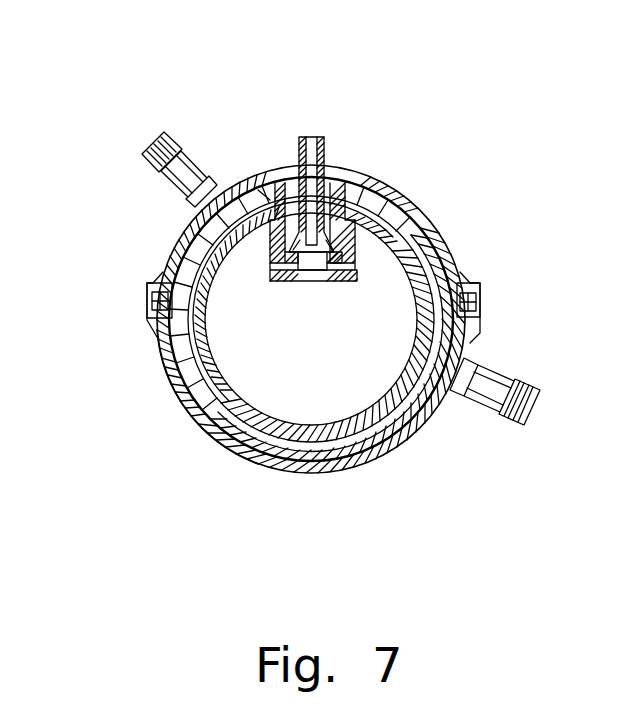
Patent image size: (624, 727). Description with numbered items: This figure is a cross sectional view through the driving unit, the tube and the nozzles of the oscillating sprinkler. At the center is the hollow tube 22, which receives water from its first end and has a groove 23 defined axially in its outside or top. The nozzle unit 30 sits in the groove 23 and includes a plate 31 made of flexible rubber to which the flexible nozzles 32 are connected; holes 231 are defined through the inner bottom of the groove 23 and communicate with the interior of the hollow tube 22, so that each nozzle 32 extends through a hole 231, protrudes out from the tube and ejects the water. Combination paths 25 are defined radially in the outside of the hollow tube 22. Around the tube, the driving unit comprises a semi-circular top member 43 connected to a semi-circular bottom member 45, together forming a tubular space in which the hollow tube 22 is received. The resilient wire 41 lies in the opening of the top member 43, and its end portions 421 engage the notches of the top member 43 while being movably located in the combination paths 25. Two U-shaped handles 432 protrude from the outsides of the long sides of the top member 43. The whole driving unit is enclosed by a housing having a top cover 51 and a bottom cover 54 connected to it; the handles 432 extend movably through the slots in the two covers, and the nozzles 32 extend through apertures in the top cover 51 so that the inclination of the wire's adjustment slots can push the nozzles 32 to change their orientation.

The hollow tube 22 is at (284, 437).
The groove 23 is at (336, 226).
The holes 231 is at (332, 258).
The combination paths 25 is at (605, 77).
The nozzle unit 30 is at (291, 127).
The plate 31 is at (287, 287).
The nozzles 32 is at (326, 148).
The resilient wire 41 is at (442, 270).
The end portion 421 is at (262, 196).
The top member 43 is at (441, 365).
The handles 432 is at (173, 187).
The bottom member 45 is at (398, 420).
The top cover 51 is at (420, 210).
The bottom cover 54 is at (190, 408).